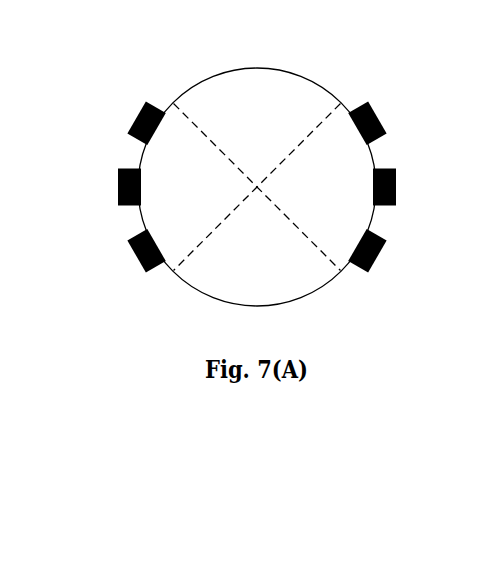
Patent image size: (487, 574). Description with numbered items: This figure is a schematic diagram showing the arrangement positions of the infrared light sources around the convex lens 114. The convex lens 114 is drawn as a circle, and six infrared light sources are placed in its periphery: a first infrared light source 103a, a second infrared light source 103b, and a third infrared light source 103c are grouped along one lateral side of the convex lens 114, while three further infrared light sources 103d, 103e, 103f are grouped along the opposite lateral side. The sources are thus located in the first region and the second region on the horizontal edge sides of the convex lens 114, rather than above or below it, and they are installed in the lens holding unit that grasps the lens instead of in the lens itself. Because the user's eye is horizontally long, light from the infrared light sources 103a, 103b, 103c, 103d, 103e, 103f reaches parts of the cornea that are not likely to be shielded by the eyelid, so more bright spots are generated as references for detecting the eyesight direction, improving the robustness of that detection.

The convex lens 114 is at (257, 82).
The first infrared light source 103a is at (135, 117).
The second infrared light source 103b is at (118, 180).
The third infrared light source 103c is at (140, 258).
The infrared light source 103d is at (372, 107).
The infrared light source 103e is at (398, 180).
The infrared light source 103f is at (380, 258).